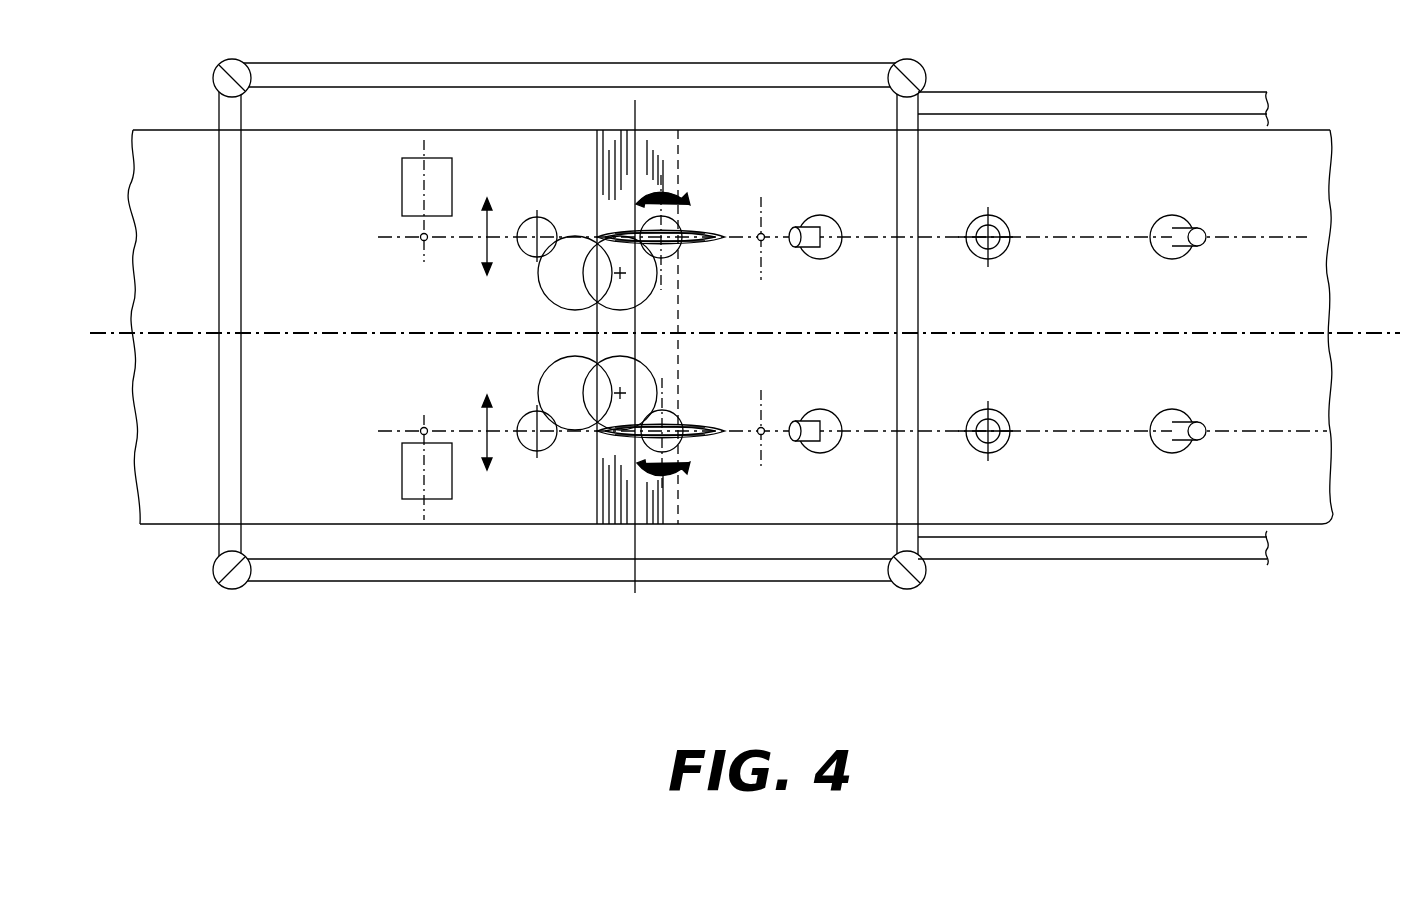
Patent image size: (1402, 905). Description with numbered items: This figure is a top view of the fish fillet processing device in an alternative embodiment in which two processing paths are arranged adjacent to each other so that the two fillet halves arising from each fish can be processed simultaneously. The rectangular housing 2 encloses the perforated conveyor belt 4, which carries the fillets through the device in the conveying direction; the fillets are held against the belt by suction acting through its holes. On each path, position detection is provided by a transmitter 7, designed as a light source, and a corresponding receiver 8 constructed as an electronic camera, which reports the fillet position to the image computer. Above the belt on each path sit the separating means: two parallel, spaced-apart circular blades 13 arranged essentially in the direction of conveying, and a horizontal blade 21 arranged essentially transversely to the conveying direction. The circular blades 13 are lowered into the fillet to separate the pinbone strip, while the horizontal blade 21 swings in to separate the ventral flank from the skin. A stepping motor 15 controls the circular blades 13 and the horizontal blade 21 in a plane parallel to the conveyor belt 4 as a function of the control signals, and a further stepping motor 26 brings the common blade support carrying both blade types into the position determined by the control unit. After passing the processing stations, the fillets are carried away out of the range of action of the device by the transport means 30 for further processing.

The housing 2 is at (806, 70).
The perforated conveyor belt 4 is at (1295, 404).
The transmitter 7 is at (825, 245).
The receiver 8 is at (995, 215).
The circular blade 13 is at (700, 225).
The stepping motor 15 is at (410, 186).
The horizontal blade 21 is at (645, 283).
The stepping motor 26 is at (528, 222).
The transport means 30 is at (334, 396).